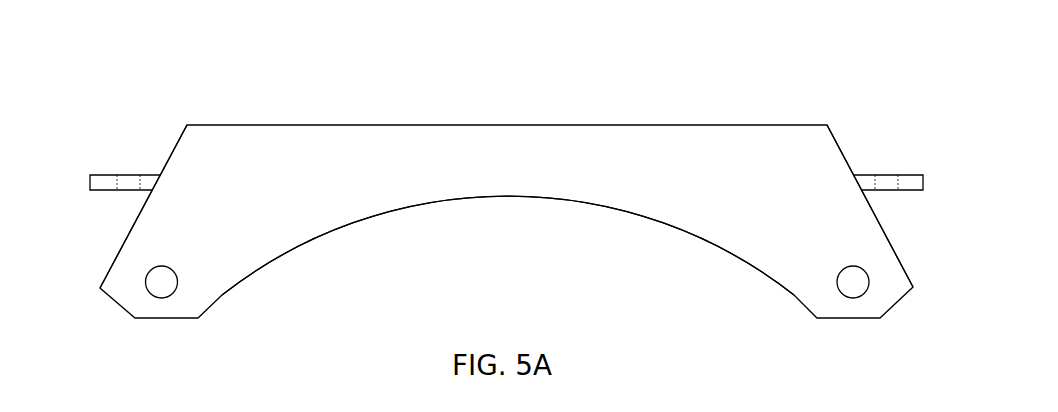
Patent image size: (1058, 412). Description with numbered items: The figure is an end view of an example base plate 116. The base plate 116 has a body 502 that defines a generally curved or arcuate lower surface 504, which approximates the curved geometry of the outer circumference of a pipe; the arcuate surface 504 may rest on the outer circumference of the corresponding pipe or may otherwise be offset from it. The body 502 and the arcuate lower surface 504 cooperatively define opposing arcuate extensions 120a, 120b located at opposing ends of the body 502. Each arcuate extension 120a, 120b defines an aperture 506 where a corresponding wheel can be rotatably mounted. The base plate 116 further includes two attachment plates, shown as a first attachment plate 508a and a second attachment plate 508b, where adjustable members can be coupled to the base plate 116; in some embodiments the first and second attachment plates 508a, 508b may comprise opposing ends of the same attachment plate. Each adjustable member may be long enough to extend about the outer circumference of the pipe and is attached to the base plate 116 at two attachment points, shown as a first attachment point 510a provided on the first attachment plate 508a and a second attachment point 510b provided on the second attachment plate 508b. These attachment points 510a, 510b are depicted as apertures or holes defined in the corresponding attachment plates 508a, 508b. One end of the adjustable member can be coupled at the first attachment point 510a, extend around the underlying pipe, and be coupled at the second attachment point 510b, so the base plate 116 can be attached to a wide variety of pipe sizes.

The base plate 116 is at (155, 45).
The body 502 is at (557, 115).
The arcuate lower surface 504 is at (470, 197).
The aperture 506 is at (157, 286).
The arcuate extension 120a is at (115, 222).
The arcuate extension 120b is at (890, 218).
The first attachment plate 508a is at (99, 175).
The second attachment plate 508b is at (915, 178).
The first attachment point 510a is at (130, 178).
The second attachment point 510b is at (887, 180).